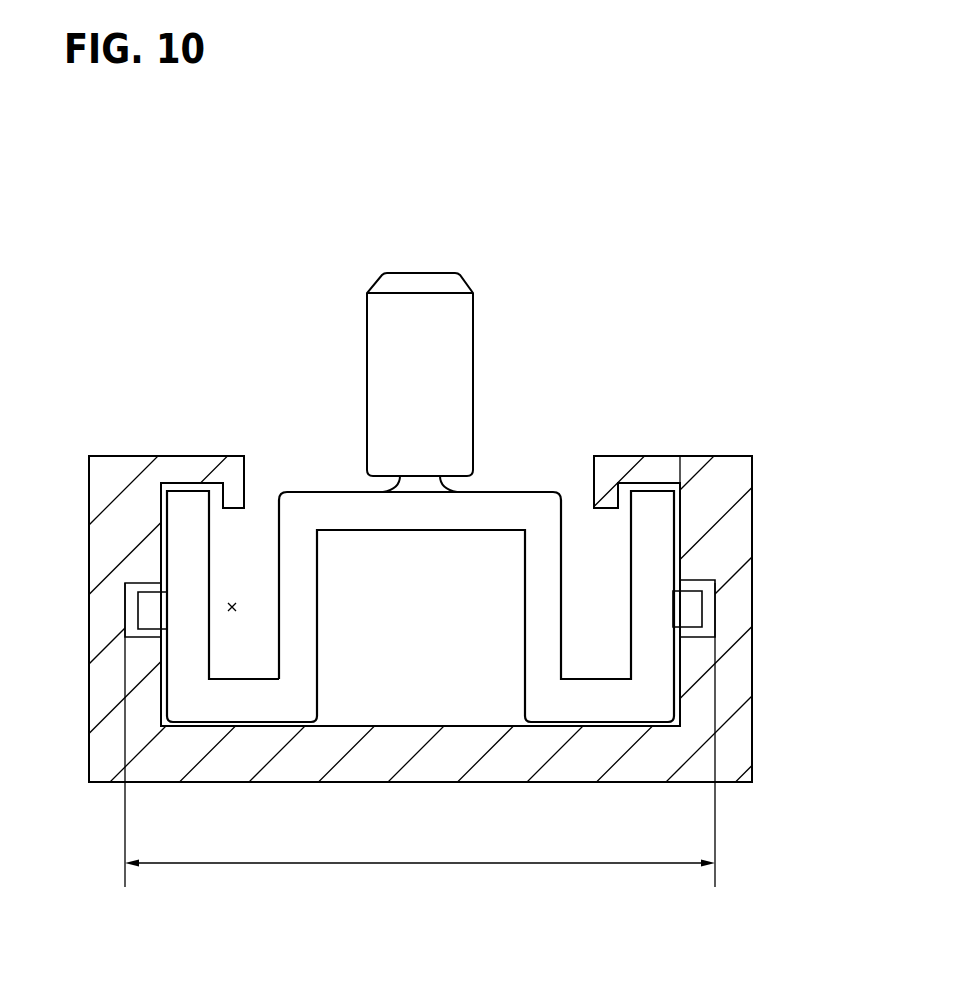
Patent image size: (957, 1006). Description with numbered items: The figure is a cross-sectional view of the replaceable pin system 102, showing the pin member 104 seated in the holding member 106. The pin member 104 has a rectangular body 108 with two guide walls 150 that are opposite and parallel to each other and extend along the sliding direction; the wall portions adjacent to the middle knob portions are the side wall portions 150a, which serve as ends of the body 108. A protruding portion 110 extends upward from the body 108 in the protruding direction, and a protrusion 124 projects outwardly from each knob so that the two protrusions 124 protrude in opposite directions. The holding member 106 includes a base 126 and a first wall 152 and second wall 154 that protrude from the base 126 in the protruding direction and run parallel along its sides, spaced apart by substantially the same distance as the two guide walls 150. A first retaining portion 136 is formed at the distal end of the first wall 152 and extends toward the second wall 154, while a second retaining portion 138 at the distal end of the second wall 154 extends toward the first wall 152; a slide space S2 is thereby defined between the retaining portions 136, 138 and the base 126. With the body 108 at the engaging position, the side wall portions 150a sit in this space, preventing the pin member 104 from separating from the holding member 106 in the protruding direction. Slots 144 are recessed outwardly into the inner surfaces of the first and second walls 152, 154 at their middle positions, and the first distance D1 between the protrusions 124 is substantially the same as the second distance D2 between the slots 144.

The replaceable pin system 102 is at (638, 274).
The pin member 104 is at (461, 382).
The holding member 106 is at (478, 622).
The body 108 is at (421, 661).
The protruding portion 110 is at (483, 355).
The protrusion 124 is at (147, 616).
The base 126 is at (305, 768).
The first retaining portion 136 is at (193, 463).
The second retaining portion 138 is at (648, 466).
The slot 144 is at (130, 597).
The guide wall 150 is at (421, 583).
The side wall portion 150a is at (180, 522).
The first wall 152 is at (107, 537).
The second wall 154 is at (731, 477).
The slide space S2 is at (232, 611).
The first distance D1 is at (420, 735).
The second distance D2 is at (420, 735).